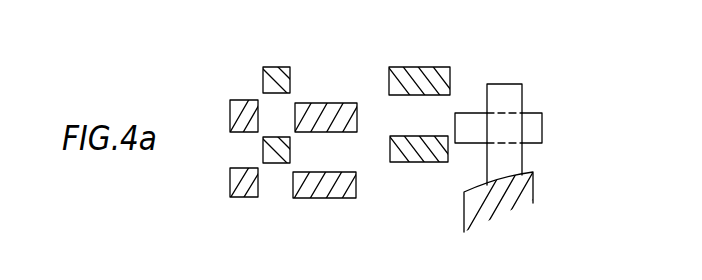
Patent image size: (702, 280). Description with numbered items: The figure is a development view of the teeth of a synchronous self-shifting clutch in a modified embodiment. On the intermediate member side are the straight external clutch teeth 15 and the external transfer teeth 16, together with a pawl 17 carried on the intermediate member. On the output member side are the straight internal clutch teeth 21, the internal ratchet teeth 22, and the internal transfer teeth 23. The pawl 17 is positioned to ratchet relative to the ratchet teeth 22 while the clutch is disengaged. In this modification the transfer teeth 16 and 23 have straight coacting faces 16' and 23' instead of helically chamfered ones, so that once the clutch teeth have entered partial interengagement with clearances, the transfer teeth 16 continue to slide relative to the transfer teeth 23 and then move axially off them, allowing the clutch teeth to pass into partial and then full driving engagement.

The external clutch teeth 15 is at (417, 67).
The external transfer teeth 16 is at (289, 105).
The coacting face of transfer teeth 16' is at (323, 106).
The pawls 17 is at (500, 84).
The internal clutch teeth 21 is at (322, 189).
The ratchet teeth 22 is at (523, 194).
The internal transfer teeth 23 is at (228, 175).
The coacting face of transfer teeth 23' is at (228, 105).